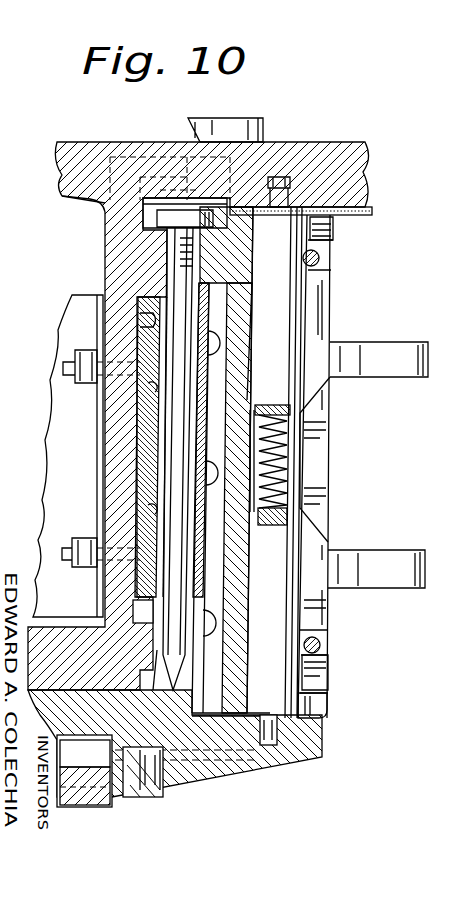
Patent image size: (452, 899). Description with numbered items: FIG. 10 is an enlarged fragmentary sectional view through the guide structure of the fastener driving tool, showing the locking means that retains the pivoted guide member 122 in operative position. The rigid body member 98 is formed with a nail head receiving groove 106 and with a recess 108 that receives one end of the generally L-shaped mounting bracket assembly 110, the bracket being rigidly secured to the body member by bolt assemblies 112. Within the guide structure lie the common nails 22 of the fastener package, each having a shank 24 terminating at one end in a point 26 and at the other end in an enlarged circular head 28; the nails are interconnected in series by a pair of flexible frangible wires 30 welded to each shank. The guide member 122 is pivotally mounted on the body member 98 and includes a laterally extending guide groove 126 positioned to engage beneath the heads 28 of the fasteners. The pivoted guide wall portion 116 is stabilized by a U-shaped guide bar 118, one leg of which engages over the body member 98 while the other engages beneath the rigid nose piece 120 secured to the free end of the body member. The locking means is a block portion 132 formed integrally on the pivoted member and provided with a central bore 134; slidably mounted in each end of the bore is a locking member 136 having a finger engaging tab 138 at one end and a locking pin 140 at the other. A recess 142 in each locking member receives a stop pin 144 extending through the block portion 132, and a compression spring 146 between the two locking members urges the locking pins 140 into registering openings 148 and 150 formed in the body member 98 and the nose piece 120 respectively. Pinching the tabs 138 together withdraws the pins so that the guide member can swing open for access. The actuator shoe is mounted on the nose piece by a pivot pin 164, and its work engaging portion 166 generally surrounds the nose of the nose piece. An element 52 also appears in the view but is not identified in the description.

The body member 98 is at (62, 142).
The nail head receiving groove 106 is at (97, 200).
The U-shaped guide bar 118 is at (248, 128).
The registering opening 148 is at (292, 178).
The locking pin 140 is at (350, 202).
The guide groove 126 is at (322, 215).
The recess 142 is at (334, 236).
The stop pin 144 is at (320, 258).
The block portion 132 is at (333, 270).
The locking member 136 is at (295, 322).
The finger engaging tab 138 is at (405, 380).
The compression spring 146 is at (286, 480).
The central bore 134 is at (268, 282).
The shank 24 is at (182, 440).
The guide wall portion 116 is at (206, 557).
The guide member 122 is at (256, 332).
The head 28 is at (147, 220).
The nail 22 is at (173, 255).
The recess 108 is at (148, 320).
The bolt assembly 112 is at (68, 369).
The frangible wire 30 is at (137, 388).
The mounting bracket assembly 110 is at (95, 480).
The point 26 is at (172, 692).
The nose piece 120 is at (283, 772).
The registering opening 150 is at (287, 782).
The pivot pin 164 is at (193, 793).
The work engaging portion 166 is at (97, 808).
The frame 52 is at (440, 629).